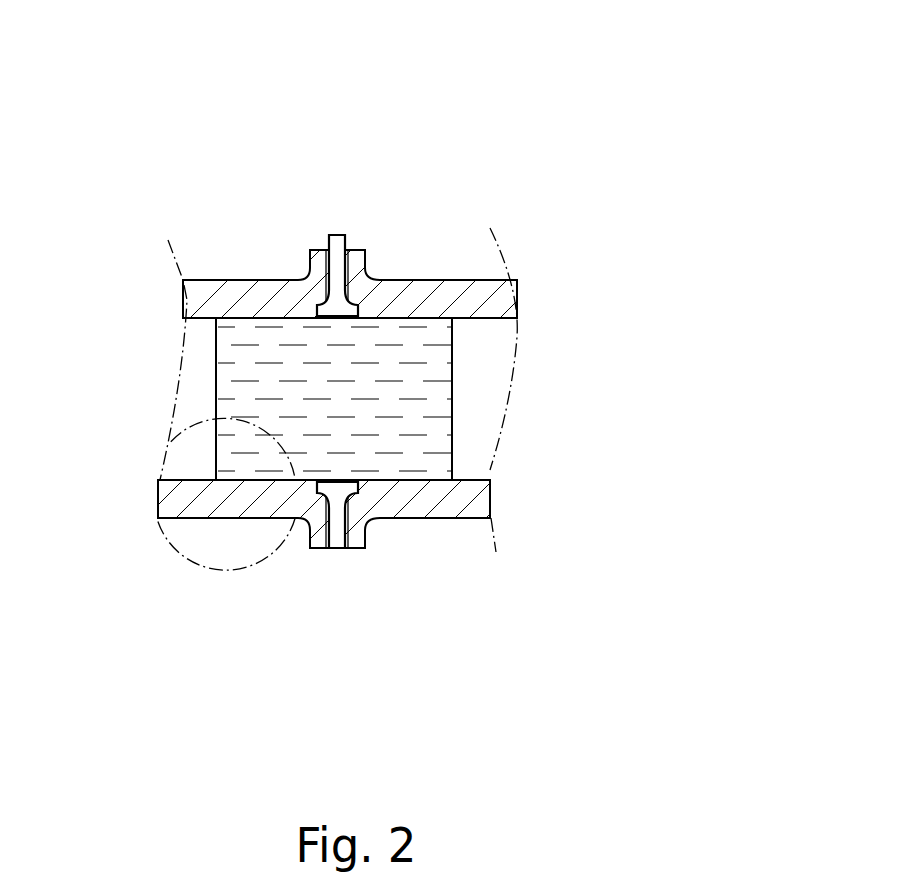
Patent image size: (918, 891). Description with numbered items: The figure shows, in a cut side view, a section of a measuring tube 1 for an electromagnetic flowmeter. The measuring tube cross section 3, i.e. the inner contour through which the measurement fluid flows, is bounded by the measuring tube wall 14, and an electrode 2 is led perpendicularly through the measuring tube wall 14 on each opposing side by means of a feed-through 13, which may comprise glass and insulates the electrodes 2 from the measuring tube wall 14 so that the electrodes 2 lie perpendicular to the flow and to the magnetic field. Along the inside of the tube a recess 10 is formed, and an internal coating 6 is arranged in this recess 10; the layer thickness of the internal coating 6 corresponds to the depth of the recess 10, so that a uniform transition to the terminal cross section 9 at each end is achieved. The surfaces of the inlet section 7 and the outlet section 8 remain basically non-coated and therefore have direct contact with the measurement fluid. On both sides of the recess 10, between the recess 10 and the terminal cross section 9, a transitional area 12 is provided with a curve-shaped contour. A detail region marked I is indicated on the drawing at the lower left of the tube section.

The measuring tube 1 is at (223, 213).
The electrode 2 is at (345, 237).
The measuring tube cross section 3 is at (333, 442).
The internal coating 6 is at (402, 347).
The inlet section 7 is at (192, 470).
The outlet section 8 is at (478, 326).
The terminal cross section 9 is at (495, 402).
The recess 10 is at (418, 519).
The transitional area 12 is at (456, 496).
The feed-through 13 is at (346, 306).
The measuring tube wall 14 is at (480, 280).
The detail section I is at (183, 563).